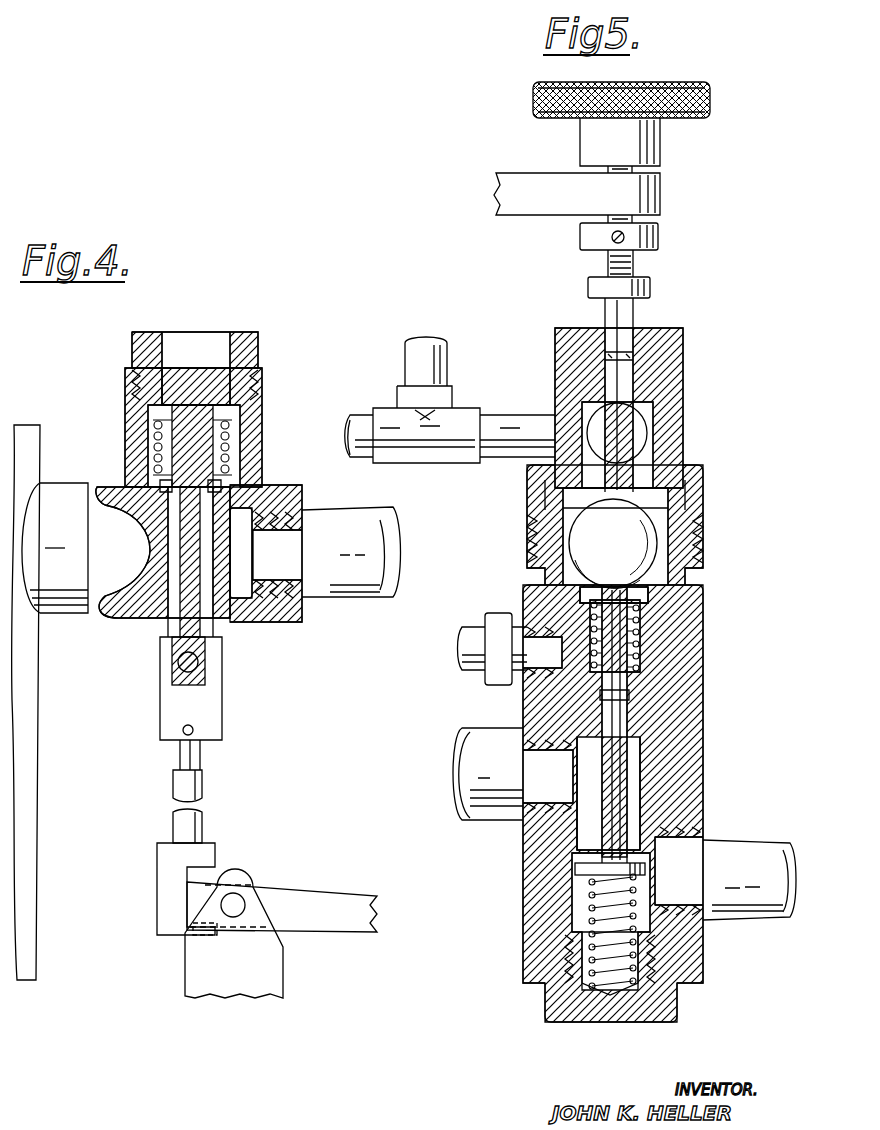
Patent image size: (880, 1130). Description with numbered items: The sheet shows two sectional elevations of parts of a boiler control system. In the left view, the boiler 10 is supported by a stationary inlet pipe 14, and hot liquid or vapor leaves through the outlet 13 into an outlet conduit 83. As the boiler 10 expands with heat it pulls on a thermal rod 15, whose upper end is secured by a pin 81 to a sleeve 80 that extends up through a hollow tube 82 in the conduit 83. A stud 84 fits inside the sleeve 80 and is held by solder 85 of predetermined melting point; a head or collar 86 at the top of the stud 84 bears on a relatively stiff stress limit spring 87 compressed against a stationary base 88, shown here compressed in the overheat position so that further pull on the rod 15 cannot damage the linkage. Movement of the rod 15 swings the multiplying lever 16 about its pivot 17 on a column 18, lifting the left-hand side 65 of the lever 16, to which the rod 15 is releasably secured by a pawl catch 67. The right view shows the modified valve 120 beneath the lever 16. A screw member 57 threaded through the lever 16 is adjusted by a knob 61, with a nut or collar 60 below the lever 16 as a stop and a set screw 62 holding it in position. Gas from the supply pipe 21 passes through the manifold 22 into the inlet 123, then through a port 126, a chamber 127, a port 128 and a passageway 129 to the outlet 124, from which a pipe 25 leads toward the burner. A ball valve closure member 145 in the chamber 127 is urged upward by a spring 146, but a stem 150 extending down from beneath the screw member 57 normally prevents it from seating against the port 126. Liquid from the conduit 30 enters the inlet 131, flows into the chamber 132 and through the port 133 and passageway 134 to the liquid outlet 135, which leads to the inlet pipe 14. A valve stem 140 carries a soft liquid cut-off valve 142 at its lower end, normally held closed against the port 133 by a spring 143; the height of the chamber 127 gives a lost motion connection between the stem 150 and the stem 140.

In FIG. 4, the boiler 10 is at (37, 832).
In FIG. 4, the outlet 13 is at (82, 458).
In FIG. 5, the stationary inlet pipe 14 is at (477, 743).
In FIG. 4, the rod 15 is at (200, 815).
In FIG. 4, the multiplying lever 16 is at (360, 875).
In FIG. 5, the multiplying lever 16 is at (507, 185).
In FIG. 4, the pivot 17 is at (237, 915).
In FIG. 4, the column 18 is at (273, 985).
In FIG. 5, the low pressure gas supply pipe 21 is at (413, 360).
In FIG. 5, the manifold 22 is at (470, 455).
In FIG. 5, the pipe 25 is at (462, 652).
In FIG. 5, the conduit 30 is at (752, 920).
In FIG. 5, the screw member 57 is at (633, 263).
In FIG. 5, the nut or collar 60 is at (658, 237).
In FIG. 5, the knob 61 is at (680, 82).
In FIG. 5, the set screw 62 is at (610, 240).
In FIG. 4, the left-hand side of the lever 65 is at (200, 900).
In FIG. 4, the pawl catch 67 is at (195, 940).
In FIG. 4, the sleeve 80 is at (213, 628).
In FIG. 4, the pin 81 is at (180, 665).
In FIG. 4, the hollow tube 82 is at (172, 545).
In FIG. 4, the outlet conduit 83 is at (137, 577).
In FIG. 4, the stud 84 is at (197, 503).
In FIG. 4, the solder 85 is at (200, 548).
In FIG. 4, the head or collar 86 is at (197, 420).
In FIG. 4, the stress limit spring 87 is at (230, 447).
In FIG. 4, the stationary base 88 is at (163, 487).
In FIG. 5, the valve 120 is at (684, 333).
In FIG. 5, the inlet 123 is at (640, 433).
In FIG. 5, the outlet 124 is at (547, 652).
In FIG. 5, the port 126 is at (643, 493).
In FIG. 5, the chamber 127 is at (663, 547).
In FIG. 5, the port 128 is at (647, 592).
In FIG. 5, the passageway 129 is at (640, 642).
In FIG. 5, the inlet 131 is at (697, 863).
In FIG. 5, the chamber 132 is at (577, 895).
In FIG. 5, the port 133 is at (580, 853).
In FIG. 5, the passageway 134 is at (635, 783).
In FIG. 5, the liquid outlet 135 is at (508, 783).
In FIG. 5, the valve stem 140 is at (615, 722).
In FIG. 5, the liquid cut-off valve 142 is at (640, 870).
In FIG. 5, the spring 143 is at (588, 908).
In FIG. 5, the ball valve closure member 145 is at (636, 551).
In FIG. 5, the spring 146 is at (593, 608).
In FIG. 5, the stem 150 is at (620, 390).